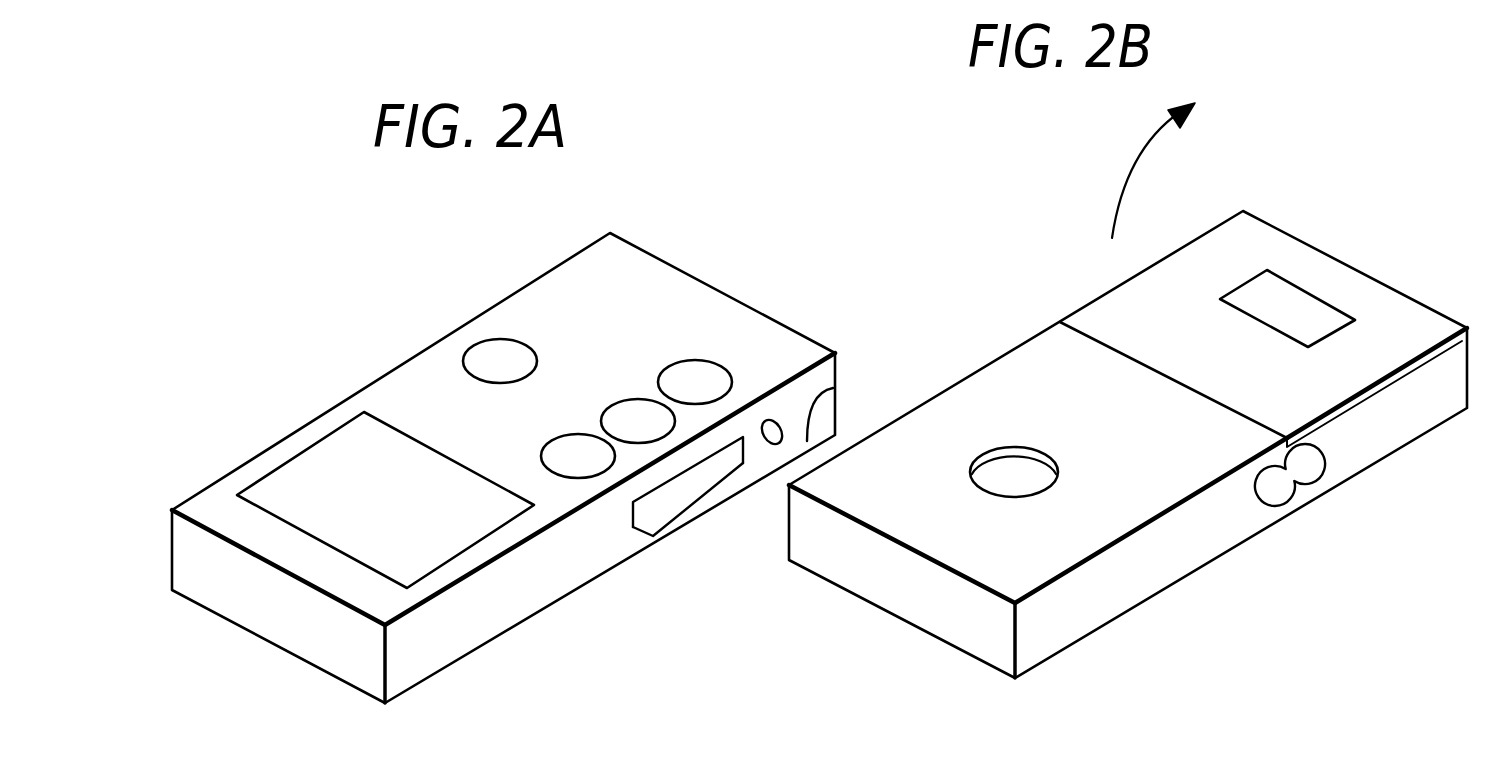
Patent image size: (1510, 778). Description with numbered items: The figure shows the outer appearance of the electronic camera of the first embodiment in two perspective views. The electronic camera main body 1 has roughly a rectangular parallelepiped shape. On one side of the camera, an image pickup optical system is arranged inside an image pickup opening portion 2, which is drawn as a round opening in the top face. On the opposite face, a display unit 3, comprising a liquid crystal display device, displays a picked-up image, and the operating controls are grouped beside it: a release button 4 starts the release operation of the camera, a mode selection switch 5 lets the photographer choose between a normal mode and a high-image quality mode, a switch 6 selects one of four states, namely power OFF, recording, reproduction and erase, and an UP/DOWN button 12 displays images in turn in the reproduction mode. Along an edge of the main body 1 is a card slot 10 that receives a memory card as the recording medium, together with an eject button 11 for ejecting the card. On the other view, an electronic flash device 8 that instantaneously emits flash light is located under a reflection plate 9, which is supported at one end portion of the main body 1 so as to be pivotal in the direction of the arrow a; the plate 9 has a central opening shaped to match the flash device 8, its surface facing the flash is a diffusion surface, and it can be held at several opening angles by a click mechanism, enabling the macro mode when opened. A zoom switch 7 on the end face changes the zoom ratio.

In FIG. 2A, the electronic camera main body 1 is at (630, 242).
In FIG. 2B, the electronic camera main body 1 is at (1265, 219).
In FIG. 2B, the image pickup opening portion 2 is at (1018, 468).
In FIG. 2A, the display unit 3 is at (327, 450).
In FIG. 2A, the release button 4 is at (497, 353).
In FIG. 2A, the mode selection switch 5 is at (574, 442).
In FIG. 2A, the switch 6 is at (628, 410).
In FIG. 2B, the zoom switch 7 is at (1272, 495).
In FIG. 2B, the electronic flash device 8 is at (1302, 303).
In FIG. 2B, the reflection plate 9 is at (1357, 377).
In FIG. 2A, the card slot 10 is at (643, 510).
In FIG. 2A, the eject button 11 is at (782, 422).
In FIG. 2A, the UP/DOWN button 12 is at (688, 370).
In FIG. 2B, the arrow a is at (1122, 193).